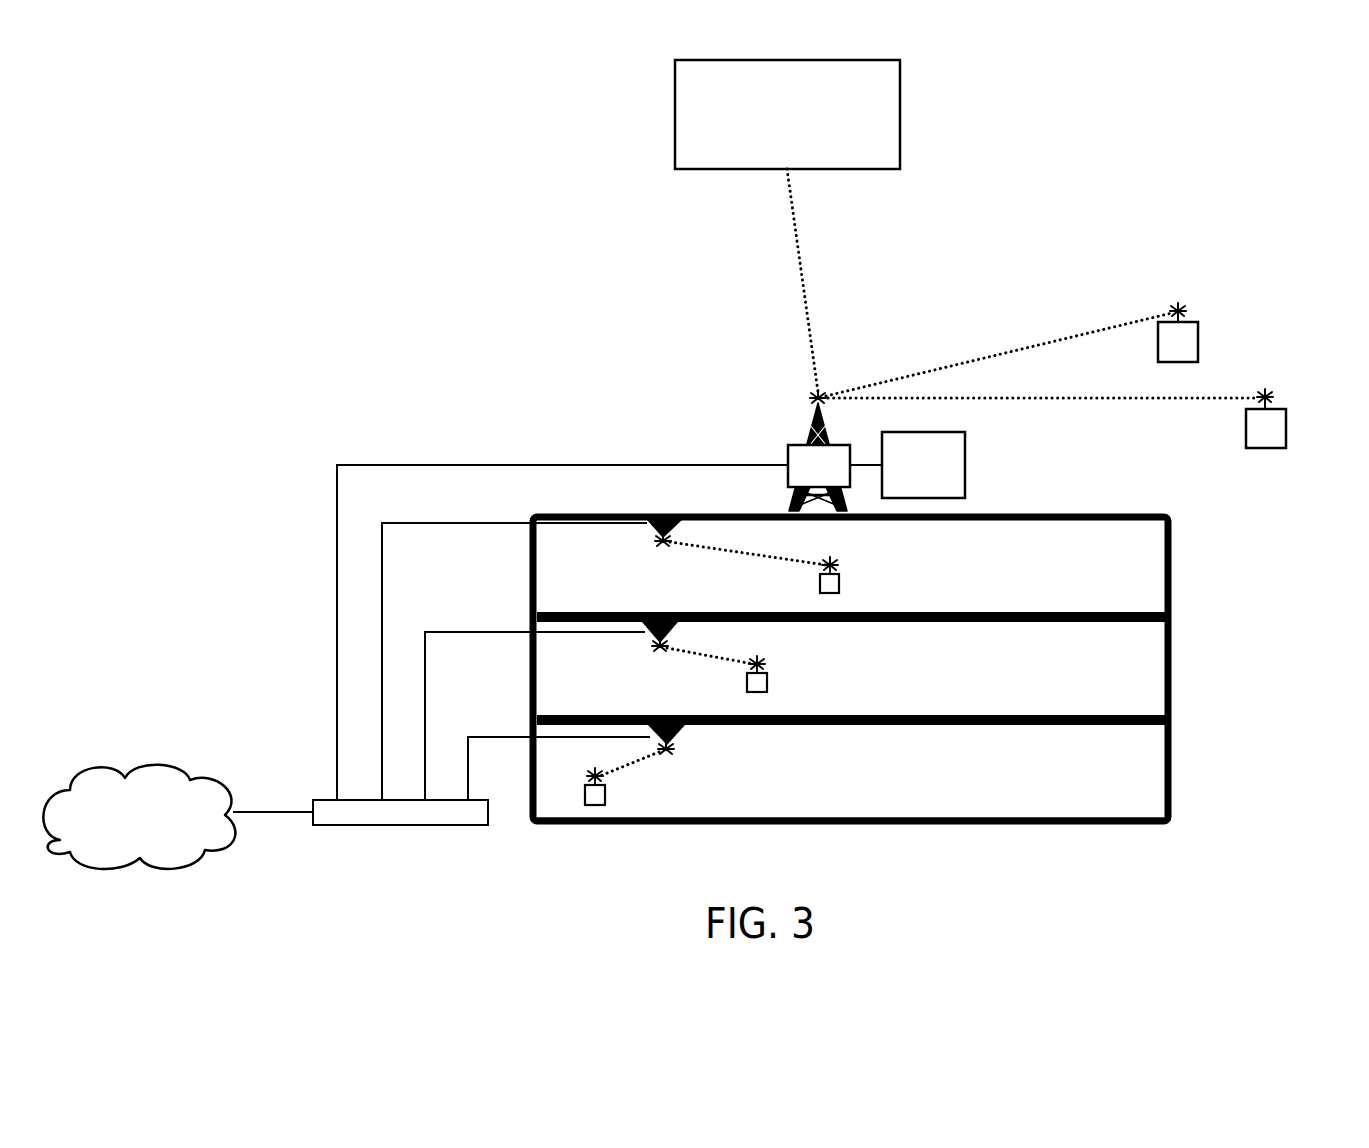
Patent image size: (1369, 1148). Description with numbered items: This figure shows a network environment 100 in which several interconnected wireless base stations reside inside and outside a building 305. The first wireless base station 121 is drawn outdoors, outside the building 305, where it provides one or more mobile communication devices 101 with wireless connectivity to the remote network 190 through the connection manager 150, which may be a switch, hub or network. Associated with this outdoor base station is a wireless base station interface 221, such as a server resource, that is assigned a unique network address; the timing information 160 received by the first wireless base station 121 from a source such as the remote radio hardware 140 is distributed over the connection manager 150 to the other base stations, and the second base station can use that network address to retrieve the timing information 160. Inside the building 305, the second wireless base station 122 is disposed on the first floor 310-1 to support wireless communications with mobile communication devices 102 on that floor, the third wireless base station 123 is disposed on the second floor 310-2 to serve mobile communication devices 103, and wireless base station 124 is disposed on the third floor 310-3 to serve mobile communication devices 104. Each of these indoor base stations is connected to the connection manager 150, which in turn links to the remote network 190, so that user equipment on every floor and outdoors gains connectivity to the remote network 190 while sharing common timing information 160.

The network environment 100 is at (286, 291).
The remote radio hardware 140 is at (807, 164).
The first wireless base station 121 is at (800, 430).
The wireless base station interface 221 is at (802, 479).
The timing information 160 is at (906, 491).
The mobile communication device 101 is at (1205, 340).
The connection manager 150 is at (392, 826).
The remote network 190 is at (128, 822).
The building 305 is at (1098, 844).
The third floor 310-3 is at (964, 584).
The second floor 310-2 is at (964, 694).
The first floor 310-1 is at (964, 802).
The wireless base station 124 is at (652, 538).
The mobile communication device 104 is at (845, 582).
The third wireless base station 123 is at (648, 643).
The mobile communication device 103 is at (772, 683).
The second wireless base station 122 is at (680, 737).
The mobile communication device 102 is at (612, 793).